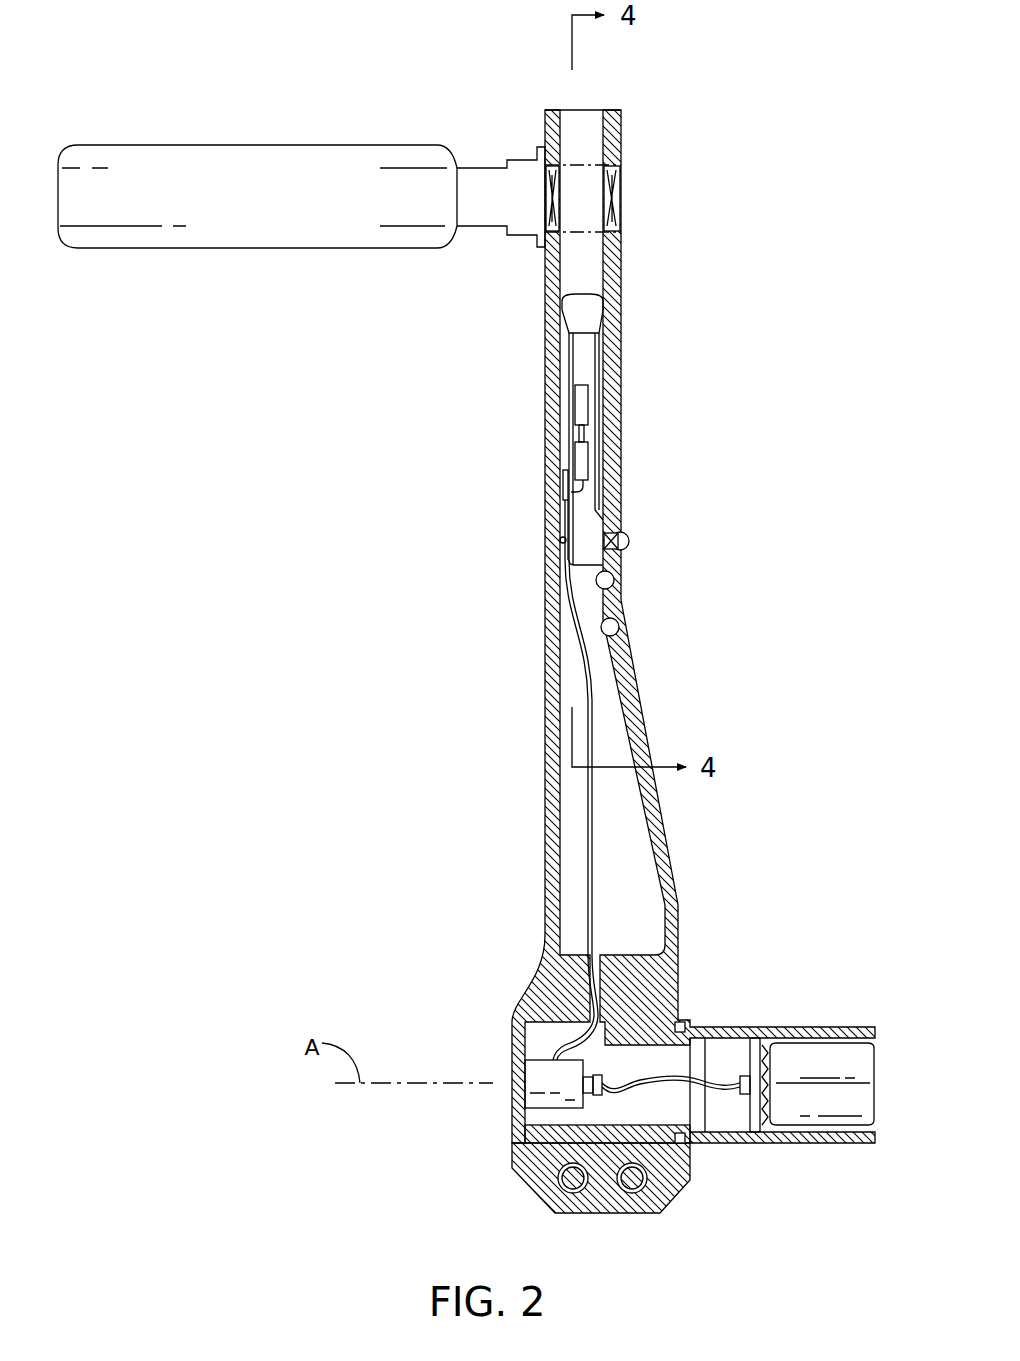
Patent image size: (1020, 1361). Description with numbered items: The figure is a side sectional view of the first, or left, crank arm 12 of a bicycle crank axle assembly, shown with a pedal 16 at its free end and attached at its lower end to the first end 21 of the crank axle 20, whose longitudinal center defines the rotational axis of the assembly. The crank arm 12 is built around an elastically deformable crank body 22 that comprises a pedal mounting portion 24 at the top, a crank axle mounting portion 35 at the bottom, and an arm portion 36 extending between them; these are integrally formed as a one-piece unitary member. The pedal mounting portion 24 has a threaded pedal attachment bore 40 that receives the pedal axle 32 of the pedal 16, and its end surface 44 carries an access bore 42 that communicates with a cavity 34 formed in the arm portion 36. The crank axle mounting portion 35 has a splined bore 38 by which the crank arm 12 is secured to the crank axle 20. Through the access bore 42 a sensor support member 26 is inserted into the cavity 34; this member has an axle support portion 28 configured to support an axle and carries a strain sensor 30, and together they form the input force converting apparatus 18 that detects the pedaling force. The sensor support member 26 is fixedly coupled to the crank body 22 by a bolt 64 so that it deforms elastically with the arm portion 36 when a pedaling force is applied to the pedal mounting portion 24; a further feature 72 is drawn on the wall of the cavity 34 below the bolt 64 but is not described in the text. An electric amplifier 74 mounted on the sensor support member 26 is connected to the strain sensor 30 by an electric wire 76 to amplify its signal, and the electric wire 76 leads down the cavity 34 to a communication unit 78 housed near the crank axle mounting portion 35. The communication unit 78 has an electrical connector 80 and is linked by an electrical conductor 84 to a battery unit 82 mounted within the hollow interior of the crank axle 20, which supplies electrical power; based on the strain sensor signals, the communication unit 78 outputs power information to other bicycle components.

The first crank arm 12 is at (790, 272).
The pedal 16 is at (196, 145).
The input force converting apparatus 18 is at (606, 450).
The crank axle 20 is at (735, 1027).
The first end 21 is at (608, 1137).
The crank body 22 is at (640, 720).
The axle mounting portion 24 is at (621, 140).
The sensor support member 26 is at (599, 357).
The axle support portion 28 is at (583, 262).
The strain sensor 30 is at (569, 437).
The pedal axle 32 is at (621, 195).
The cavity 34 is at (620, 645).
The crank axle mounting portion 35 is at (610, 1180).
The arm portion 36 is at (545, 652).
The splined bore 38 is at (548, 1160).
The threaded pedal attachment bore 40 is at (556, 172).
The access bore 42 is at (566, 127).
The end surface 44 is at (611, 110).
The bolt 64 is at (629, 541).
The upper detent 72 is at (612, 584).
The electric amplifier 74 is at (565, 500).
The electric wire 76 is at (595, 853).
The communication unit 78 is at (521, 1078).
The electrical connector 80 is at (605, 1091).
The battery unit 82 is at (822, 1062).
The electrical conductor 84 is at (726, 1092).